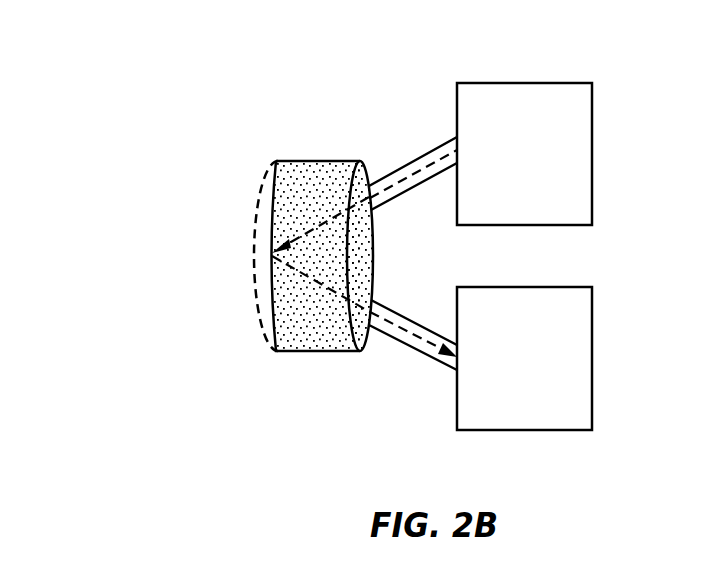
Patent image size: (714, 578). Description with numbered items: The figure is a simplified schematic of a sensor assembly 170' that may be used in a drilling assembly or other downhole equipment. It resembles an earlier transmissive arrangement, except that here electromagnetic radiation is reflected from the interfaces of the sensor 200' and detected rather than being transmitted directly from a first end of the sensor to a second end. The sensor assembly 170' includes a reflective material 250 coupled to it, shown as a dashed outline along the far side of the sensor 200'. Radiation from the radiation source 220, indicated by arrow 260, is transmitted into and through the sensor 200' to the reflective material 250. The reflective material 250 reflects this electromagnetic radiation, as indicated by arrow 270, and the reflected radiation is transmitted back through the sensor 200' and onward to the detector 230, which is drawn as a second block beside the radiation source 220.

The sensor assembly 170' is at (365, 227).
The sensor 200' is at (323, 212).
The radiation source 220 is at (502, 168).
The detector 230 is at (502, 373).
The reflective material 250 is at (253, 298).
The arrow indicating radiation from the radiation source 260 is at (403, 177).
The arrow indicating reflected electromagnetic radiation 270 is at (405, 328).